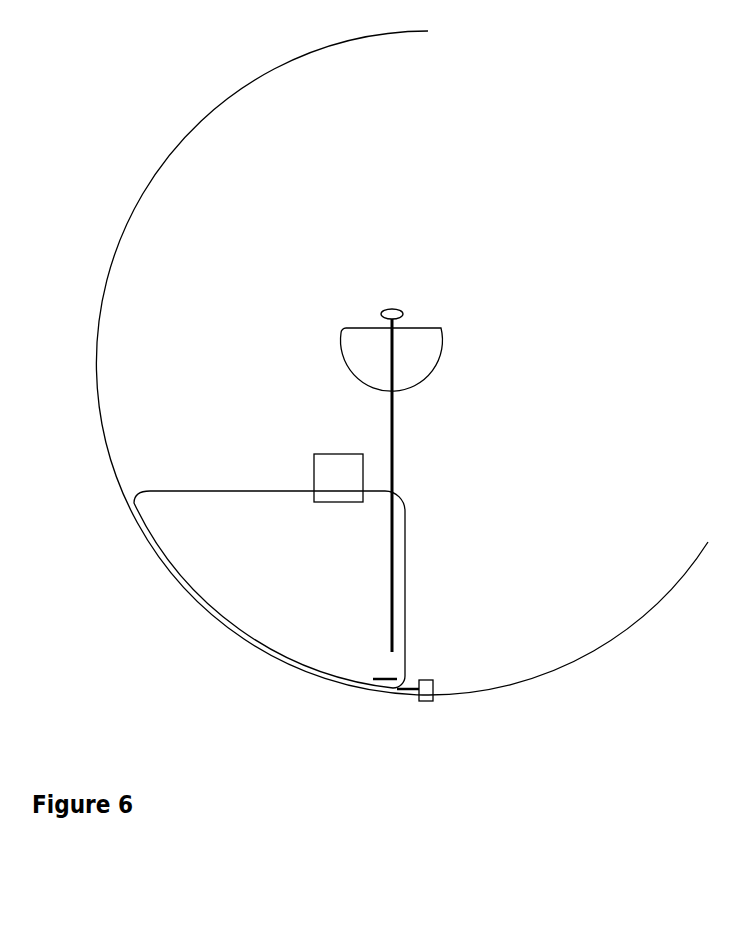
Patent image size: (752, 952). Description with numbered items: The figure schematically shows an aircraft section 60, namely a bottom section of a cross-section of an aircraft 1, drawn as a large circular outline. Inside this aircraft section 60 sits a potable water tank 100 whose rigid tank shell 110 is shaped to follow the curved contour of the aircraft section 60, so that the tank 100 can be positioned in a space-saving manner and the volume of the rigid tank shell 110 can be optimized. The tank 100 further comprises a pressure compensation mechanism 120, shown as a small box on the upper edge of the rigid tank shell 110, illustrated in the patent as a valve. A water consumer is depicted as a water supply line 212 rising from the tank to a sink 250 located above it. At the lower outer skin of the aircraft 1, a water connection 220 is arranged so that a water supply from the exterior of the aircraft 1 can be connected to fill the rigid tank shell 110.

The aircraft 1 is at (628, 630).
The aircraft section 60 is at (555, 122).
The potable water tank 100 is at (466, 510).
The rigid tank shell 110 is at (237, 491).
The pressure compensation mechanism 120 is at (340, 454).
The water supply line 212 is at (395, 409).
The water connection 220 is at (425, 703).
The sink 250 is at (423, 347).